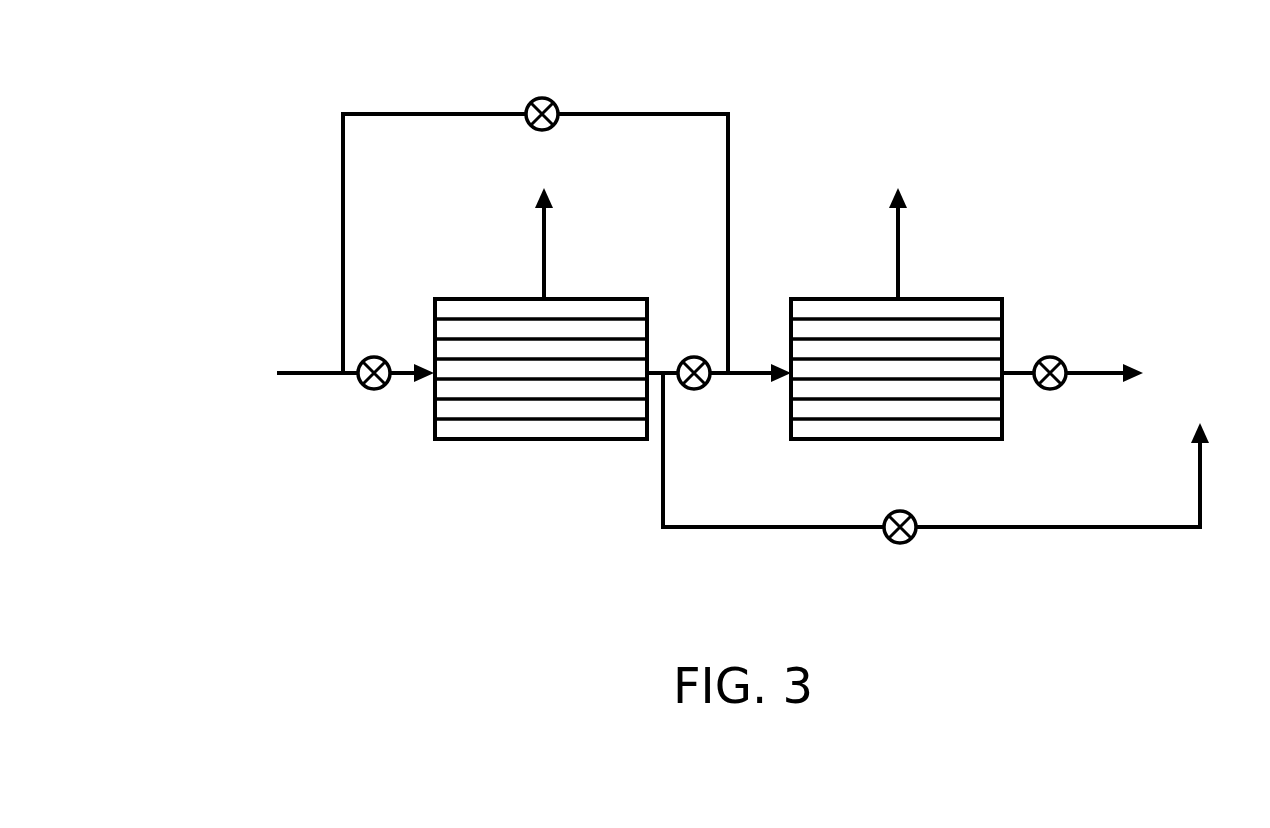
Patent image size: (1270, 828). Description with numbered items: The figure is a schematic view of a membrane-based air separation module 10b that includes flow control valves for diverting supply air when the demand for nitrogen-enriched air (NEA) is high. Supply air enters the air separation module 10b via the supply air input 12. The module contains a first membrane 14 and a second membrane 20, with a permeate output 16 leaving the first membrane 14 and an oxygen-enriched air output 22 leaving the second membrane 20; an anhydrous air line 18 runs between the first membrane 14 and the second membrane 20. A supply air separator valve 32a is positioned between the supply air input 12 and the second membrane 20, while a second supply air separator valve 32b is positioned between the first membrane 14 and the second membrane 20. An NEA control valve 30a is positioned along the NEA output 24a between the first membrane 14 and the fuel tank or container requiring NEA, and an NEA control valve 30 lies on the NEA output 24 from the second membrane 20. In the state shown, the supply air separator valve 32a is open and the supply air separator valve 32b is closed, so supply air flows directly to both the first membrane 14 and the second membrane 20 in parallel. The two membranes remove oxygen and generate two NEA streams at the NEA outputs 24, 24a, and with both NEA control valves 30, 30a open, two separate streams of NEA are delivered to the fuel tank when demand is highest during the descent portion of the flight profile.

The air separation module 10b is at (280, 140).
The supply air input 12 is at (320, 371).
The first membrane 14 is at (541, 456).
The permeate output 16 is at (546, 240).
The anhydrous air line 18 is at (758, 369).
The second membrane 20 is at (928, 452).
The oxygen-enriched air output 22 is at (900, 247).
The NEA output 24 is at (1018, 368).
The NEA output 24a is at (780, 528).
The NEA control valve 30 is at (1050, 390).
The NEA control valve 30a is at (900, 544).
The supply air separator valve 32a is at (545, 97).
The supply air separator valve 32b is at (694, 356).